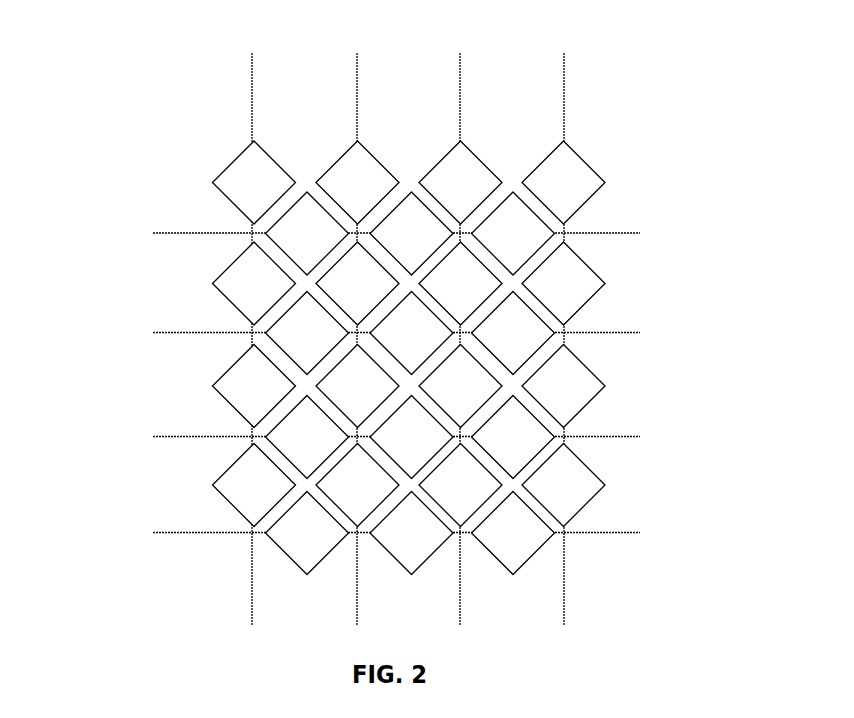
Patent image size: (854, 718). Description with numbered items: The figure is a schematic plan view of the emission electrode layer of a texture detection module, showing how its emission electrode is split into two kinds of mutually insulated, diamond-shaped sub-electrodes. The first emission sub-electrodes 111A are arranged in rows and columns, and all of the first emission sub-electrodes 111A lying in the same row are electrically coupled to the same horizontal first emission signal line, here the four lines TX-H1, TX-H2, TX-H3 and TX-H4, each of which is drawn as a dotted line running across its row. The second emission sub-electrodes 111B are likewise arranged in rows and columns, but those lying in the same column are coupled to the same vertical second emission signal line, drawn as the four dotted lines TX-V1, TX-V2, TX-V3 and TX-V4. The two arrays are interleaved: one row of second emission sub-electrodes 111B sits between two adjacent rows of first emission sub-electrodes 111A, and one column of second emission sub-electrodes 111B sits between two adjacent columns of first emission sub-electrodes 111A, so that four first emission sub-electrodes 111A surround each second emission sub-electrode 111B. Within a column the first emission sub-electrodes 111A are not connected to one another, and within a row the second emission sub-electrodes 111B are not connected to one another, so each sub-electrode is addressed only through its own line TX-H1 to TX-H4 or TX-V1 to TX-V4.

The first emission sub-electrode 111A is at (513, 233).
The second emission sub-electrode 111B is at (563, 182).
The second emission signal line TX-V1 is at (246, 322).
The second emission signal line TX-V2 is at (355, 321).
The second emission signal line TX-V3 is at (456, 322).
The second emission signal line TX-V4 is at (560, 323).
The first emission signal line TX-H1 is at (350, 234).
The first emission signal line TX-H2 is at (350, 334).
The first emission signal line TX-H3 is at (350, 438).
The first emission signal line TX-H4 is at (350, 534).